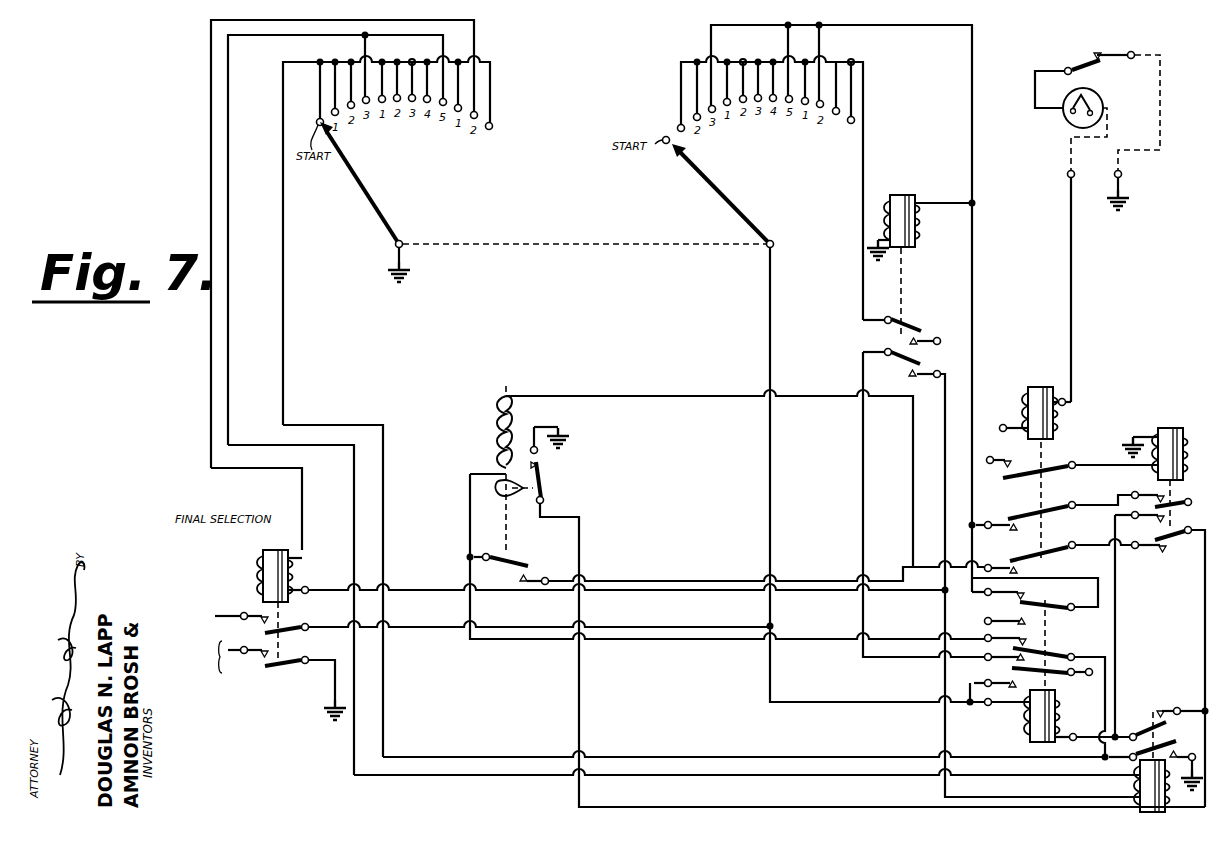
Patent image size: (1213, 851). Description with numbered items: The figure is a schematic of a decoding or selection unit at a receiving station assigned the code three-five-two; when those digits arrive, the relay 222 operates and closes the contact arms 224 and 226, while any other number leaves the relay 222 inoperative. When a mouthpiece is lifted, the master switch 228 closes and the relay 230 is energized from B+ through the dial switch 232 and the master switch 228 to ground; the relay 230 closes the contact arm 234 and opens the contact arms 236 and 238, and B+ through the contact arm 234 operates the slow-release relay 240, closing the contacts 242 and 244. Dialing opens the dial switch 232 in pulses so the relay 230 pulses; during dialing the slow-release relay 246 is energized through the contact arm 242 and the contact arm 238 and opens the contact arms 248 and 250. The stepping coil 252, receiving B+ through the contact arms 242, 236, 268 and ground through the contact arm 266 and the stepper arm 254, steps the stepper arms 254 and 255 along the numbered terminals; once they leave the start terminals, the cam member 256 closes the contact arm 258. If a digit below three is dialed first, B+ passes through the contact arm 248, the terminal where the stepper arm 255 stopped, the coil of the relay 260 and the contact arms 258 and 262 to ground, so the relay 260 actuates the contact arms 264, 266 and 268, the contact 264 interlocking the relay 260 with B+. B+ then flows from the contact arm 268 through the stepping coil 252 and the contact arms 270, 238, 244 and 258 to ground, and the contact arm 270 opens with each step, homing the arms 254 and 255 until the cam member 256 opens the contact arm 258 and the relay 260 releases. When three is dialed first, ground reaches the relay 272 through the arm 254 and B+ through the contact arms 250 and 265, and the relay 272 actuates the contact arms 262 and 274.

The relay 222 is at (260, 576).
The contact arm 224 is at (288, 620).
The contact arm 226 is at (288, 653).
The master switch 228 is at (1088, 70).
The dial switch 232 is at (1069, 119).
The relay 230 is at (1053, 432).
The contact arm 234 is at (1045, 472).
The contact arm 236 is at (1045, 512).
The contact arm 238 is at (1045, 552).
The relay 240 is at (1157, 430).
The contact 242 is at (1166, 496).
The contact 244 is at (1170, 545).
The relay 246 is at (914, 247).
The contact arm 248 is at (905, 322).
The contact arm 250 is at (898, 360).
The stepping coil 252 is at (520, 413).
The stepper arm 254 is at (382, 202).
The stepper arm 255 is at (722, 186).
The cam member 256 is at (520, 494).
The contact arm 258 is at (548, 490).
The relay 260 is at (1056, 694).
The contact arm 262 is at (1162, 712).
The contact arm 264 is at (1081, 684).
The contact arm 265 is at (1008, 667).
The contact arm 266 is at (1050, 650).
The contact arm 268 is at (1050, 612).
The contact arm 270 is at (512, 556).
The relay 272 is at (1138, 787).
The contact arm 274 is at (1172, 745).